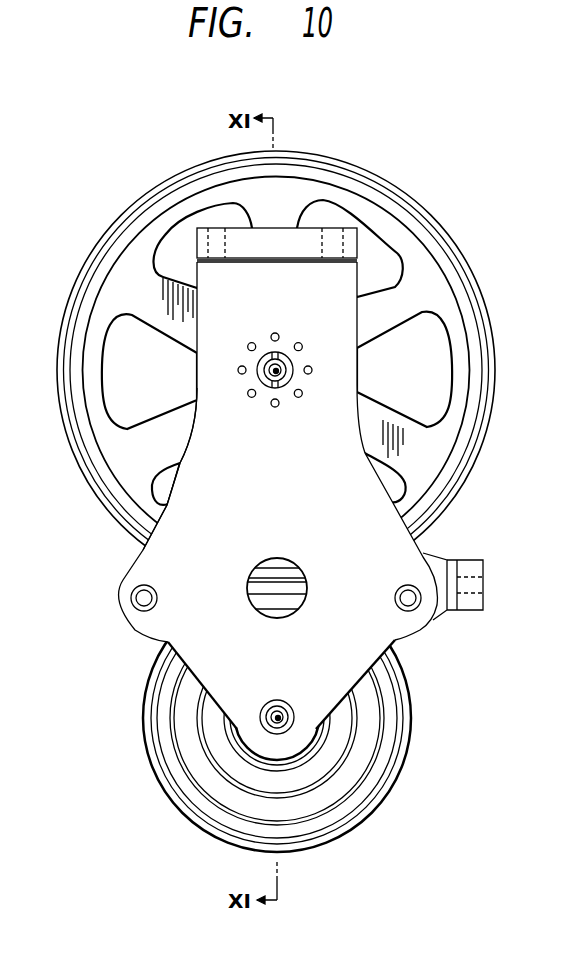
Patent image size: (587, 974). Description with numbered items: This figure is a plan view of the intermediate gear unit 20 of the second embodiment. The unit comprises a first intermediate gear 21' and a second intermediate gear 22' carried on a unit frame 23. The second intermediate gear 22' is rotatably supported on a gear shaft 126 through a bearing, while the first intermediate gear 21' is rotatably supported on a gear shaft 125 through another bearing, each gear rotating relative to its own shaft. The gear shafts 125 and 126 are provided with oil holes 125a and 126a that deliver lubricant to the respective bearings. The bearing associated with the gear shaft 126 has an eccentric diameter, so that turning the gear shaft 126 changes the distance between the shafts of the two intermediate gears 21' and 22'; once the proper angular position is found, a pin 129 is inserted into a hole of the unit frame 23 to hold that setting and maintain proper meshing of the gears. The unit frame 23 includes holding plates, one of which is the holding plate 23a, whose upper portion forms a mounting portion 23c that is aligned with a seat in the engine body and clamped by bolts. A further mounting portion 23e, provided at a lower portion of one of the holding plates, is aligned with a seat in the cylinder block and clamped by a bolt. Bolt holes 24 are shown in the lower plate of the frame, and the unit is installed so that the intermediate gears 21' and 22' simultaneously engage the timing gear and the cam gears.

The intermediate gear unit 20 is at (437, 204).
The second intermediate gear 22' is at (286, 370).
The unit frame 23 is at (361, 420).
The holding plate 23a is at (198, 440).
The mounting portion 23c is at (262, 238).
The mounting portion 23e is at (483, 567).
The bolt 24 is at (131, 598).
The gear shaft 126 is at (270, 357).
The oil hole 126a is at (272, 382).
The pin 129 is at (278, 333).
The gear shaft 125 is at (265, 703).
The oil hole 125a is at (280, 708).
The first intermediate gear 21' is at (313, 718).